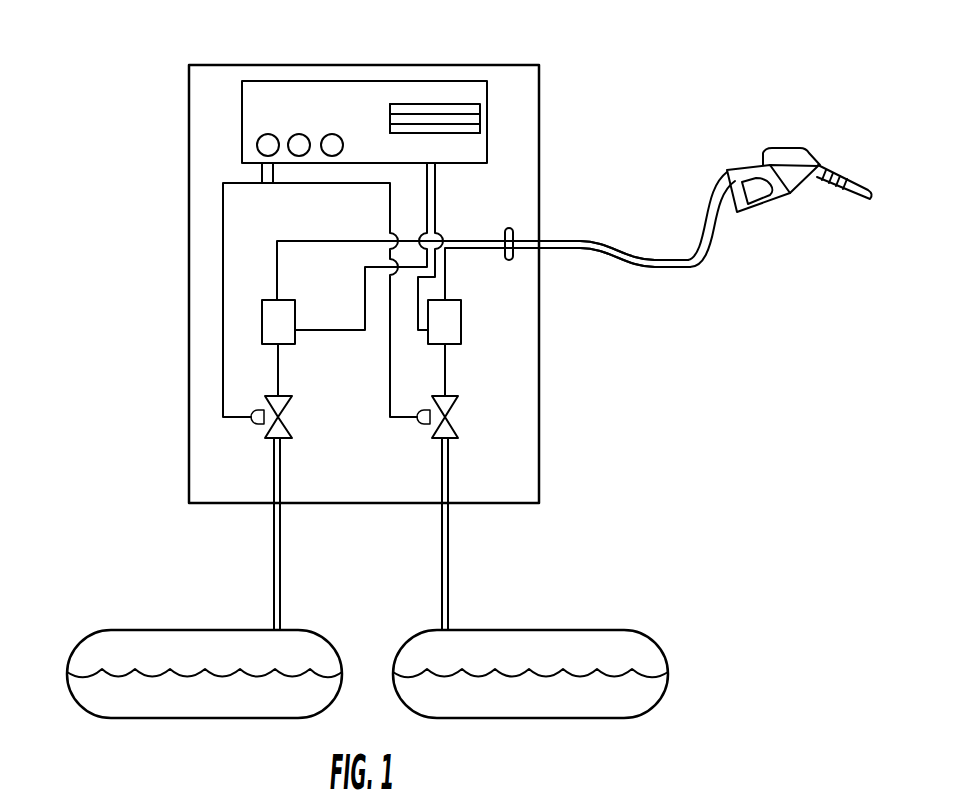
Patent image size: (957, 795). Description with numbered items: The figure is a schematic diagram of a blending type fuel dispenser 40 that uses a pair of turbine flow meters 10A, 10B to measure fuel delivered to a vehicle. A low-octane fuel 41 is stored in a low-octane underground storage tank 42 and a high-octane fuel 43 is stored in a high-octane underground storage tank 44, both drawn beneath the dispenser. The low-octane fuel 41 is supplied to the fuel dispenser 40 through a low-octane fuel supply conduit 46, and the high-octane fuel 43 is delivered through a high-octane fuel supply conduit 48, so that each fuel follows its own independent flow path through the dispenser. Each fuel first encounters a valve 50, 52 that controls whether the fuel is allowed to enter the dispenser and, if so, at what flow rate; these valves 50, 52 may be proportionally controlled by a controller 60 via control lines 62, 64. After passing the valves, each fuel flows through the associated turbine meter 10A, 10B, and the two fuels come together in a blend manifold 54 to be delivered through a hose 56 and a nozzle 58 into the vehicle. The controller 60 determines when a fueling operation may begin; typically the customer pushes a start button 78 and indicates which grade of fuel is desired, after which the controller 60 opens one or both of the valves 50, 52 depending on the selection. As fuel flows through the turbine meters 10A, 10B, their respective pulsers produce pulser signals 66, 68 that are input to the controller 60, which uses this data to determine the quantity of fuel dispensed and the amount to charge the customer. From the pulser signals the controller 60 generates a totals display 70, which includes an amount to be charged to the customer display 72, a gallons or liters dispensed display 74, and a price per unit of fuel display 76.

The fuel dispenser 40 is at (493, 65).
The controller 60 is at (487, 100).
The totals display 70 is at (410, 104).
The amount to be charged to the customer display 72 is at (390, 111).
The gallons dispensed display 74 is at (390, 120).
The price per unit of fuel display 76 is at (391, 129).
The start button 78 is at (257, 140).
The control line 64 is at (320, 185).
The control line 62 is at (223, 250).
The turbine flow meter 10A is at (295, 308).
The turbine flow meter 10B is at (461, 308).
The pulser signal 66 is at (370, 318).
The pulser signal 68 is at (420, 330).
The valve 50 is at (292, 405).
The valve 52 is at (458, 405).
The blend manifold 54 is at (509, 228).
The hose 56 is at (664, 264).
The nozzle 58 is at (780, 148).
The low-octane fuel supply conduit 46 is at (281, 548).
The high-octane fuel supply conduit 48 is at (449, 548).
The low-octane underground storage tank 42 is at (86, 640).
The low-octane fuel 41 is at (218, 702).
The high-octane underground storage tank 44 is at (595, 630).
The high-octane fuel 43 is at (583, 700).